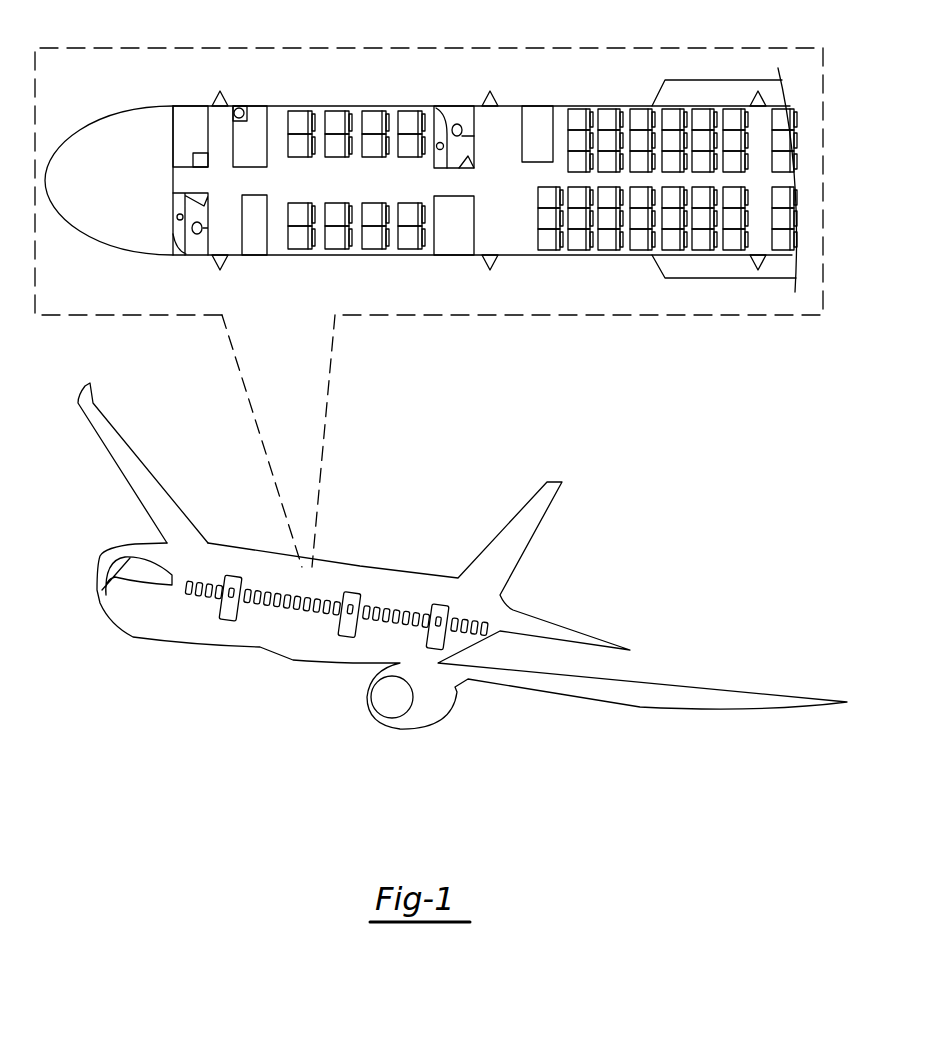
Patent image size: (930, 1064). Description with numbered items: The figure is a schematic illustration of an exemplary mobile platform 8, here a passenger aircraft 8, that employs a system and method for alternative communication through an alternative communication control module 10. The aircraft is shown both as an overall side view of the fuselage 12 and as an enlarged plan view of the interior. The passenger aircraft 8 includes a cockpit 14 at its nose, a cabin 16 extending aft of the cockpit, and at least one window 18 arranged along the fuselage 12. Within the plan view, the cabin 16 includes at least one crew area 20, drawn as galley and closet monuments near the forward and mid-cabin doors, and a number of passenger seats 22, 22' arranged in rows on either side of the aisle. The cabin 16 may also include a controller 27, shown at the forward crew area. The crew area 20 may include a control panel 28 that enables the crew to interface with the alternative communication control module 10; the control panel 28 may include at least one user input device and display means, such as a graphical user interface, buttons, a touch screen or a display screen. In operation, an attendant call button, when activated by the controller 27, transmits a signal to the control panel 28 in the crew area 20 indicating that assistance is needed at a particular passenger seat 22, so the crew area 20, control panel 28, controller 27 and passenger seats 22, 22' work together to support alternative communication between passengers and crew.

The mobile platform 8 is at (441, 556).
The alternative communication control module 10 is at (237, 108).
The fuselage 12 is at (160, 633).
The cockpit 14 is at (115, 230).
The cabin 16 is at (368, 103).
The window 18 is at (407, 595).
The crew area 20 is at (267, 125).
The passenger seat 22 is at (591, 179).
The passenger seats 22' is at (344, 180).
The controller 27 is at (246, 112).
The control panel 28 is at (200, 167).